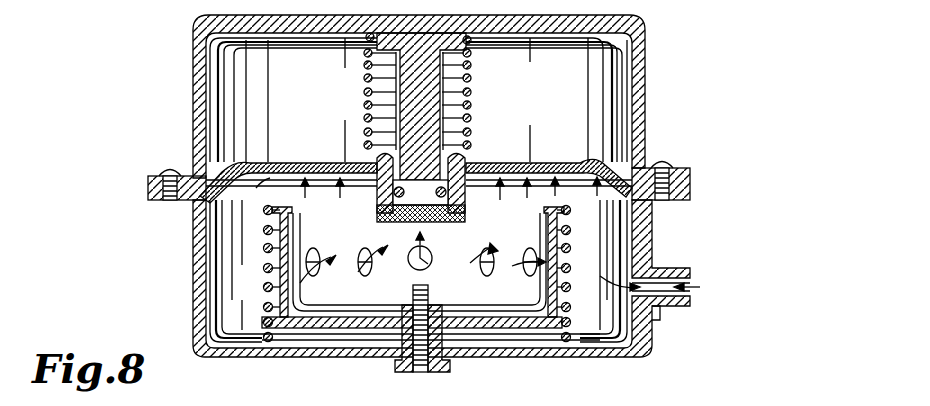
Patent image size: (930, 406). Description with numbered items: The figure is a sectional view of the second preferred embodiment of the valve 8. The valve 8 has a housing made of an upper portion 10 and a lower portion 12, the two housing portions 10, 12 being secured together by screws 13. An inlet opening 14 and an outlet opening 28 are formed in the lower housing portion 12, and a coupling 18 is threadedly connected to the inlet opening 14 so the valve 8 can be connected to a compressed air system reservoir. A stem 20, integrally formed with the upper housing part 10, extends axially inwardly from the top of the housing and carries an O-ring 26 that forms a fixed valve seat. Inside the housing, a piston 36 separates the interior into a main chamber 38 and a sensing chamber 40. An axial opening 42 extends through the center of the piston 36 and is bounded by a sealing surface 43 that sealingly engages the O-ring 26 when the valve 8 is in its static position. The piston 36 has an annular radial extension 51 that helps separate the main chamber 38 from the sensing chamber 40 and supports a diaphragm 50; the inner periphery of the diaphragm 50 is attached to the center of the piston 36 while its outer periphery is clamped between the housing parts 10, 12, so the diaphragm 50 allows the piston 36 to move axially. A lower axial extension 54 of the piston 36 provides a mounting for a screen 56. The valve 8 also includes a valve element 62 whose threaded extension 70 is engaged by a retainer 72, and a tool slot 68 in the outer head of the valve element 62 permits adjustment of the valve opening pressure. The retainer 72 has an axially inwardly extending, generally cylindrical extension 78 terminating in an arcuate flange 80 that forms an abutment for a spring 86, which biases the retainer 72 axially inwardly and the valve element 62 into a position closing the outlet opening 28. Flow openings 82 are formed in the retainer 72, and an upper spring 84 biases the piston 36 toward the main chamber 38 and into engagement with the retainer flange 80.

The valve 8 is at (186, 22).
The upper housing portion 10 is at (193, 67).
The lower housing portion 12 is at (193, 263).
The screws 13 is at (672, 161).
The inlet opening 14 is at (690, 296).
The coupling 18 is at (668, 309).
The stem 20 is at (423, 106).
The O-ring 26 is at (395, 264).
The outlet opening 28 is at (462, 340).
The piston 36 is at (462, 146).
The main chamber 38 is at (257, 294).
The sensing chamber 40 is at (345, 118).
The axial opening 42 is at (456, 131).
The sealing surface 43 is at (368, 140).
The diaphragm 50 is at (222, 162).
The annular radial extension 51 is at (258, 188).
The lower axial extension 54 is at (466, 221).
The screen 56 is at (440, 255).
The valve element 62 is at (432, 368).
The tool slot 68 is at (413, 373).
The threaded extension 70 is at (429, 292).
The retainer 72 is at (600, 355).
The cylindrical extension 78 is at (277, 240).
The arcuate flange 80 is at (590, 156).
The flow openings 82 is at (410, 276).
The upper spring 84 is at (471, 52).
The spring 86 is at (268, 347).